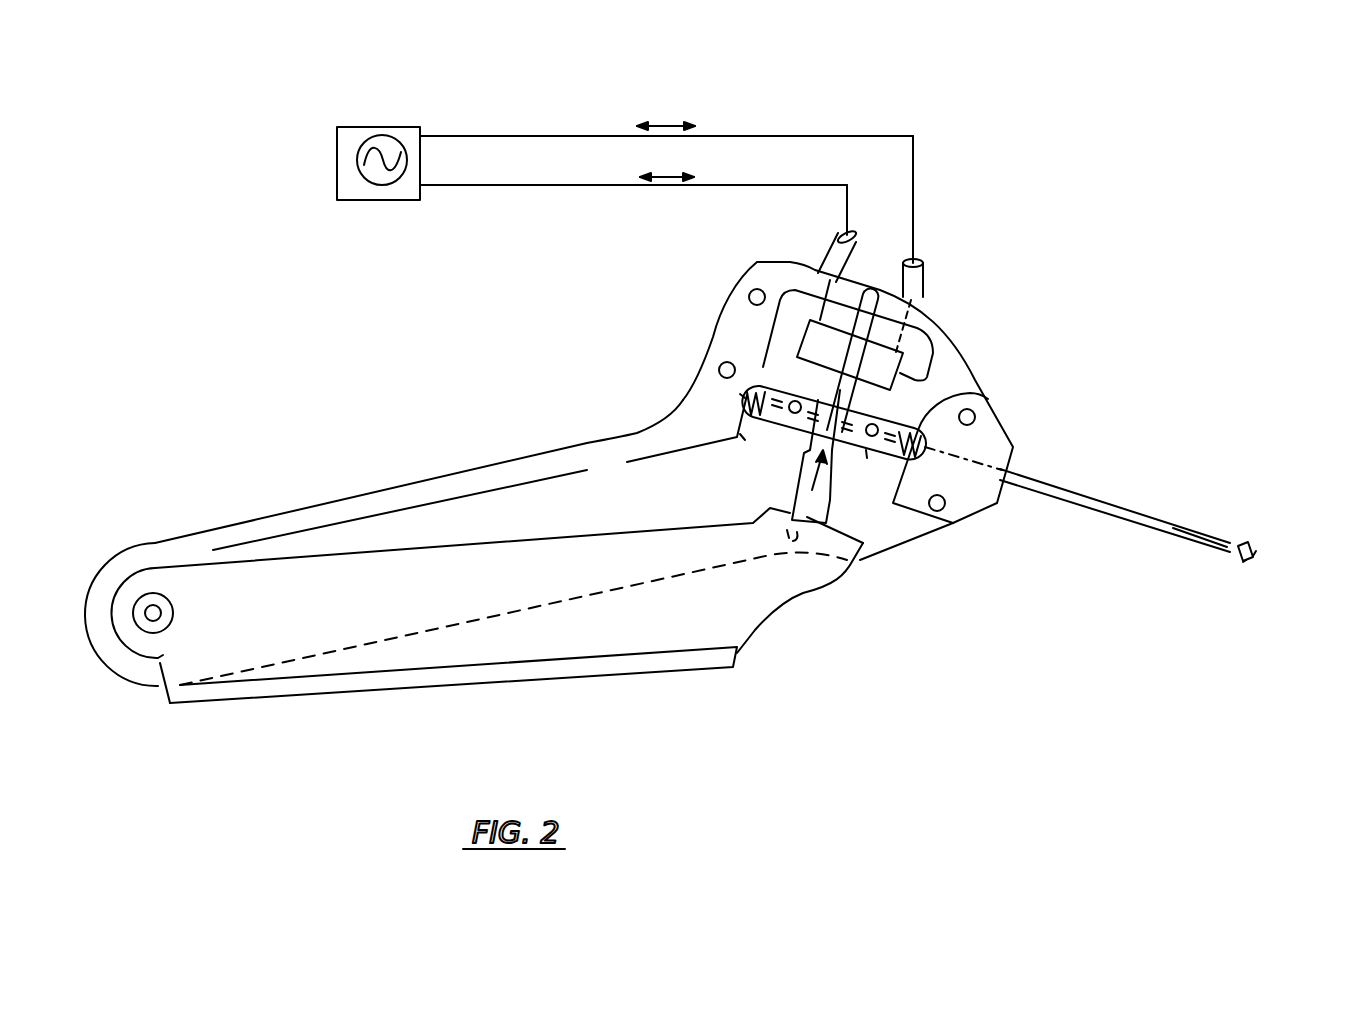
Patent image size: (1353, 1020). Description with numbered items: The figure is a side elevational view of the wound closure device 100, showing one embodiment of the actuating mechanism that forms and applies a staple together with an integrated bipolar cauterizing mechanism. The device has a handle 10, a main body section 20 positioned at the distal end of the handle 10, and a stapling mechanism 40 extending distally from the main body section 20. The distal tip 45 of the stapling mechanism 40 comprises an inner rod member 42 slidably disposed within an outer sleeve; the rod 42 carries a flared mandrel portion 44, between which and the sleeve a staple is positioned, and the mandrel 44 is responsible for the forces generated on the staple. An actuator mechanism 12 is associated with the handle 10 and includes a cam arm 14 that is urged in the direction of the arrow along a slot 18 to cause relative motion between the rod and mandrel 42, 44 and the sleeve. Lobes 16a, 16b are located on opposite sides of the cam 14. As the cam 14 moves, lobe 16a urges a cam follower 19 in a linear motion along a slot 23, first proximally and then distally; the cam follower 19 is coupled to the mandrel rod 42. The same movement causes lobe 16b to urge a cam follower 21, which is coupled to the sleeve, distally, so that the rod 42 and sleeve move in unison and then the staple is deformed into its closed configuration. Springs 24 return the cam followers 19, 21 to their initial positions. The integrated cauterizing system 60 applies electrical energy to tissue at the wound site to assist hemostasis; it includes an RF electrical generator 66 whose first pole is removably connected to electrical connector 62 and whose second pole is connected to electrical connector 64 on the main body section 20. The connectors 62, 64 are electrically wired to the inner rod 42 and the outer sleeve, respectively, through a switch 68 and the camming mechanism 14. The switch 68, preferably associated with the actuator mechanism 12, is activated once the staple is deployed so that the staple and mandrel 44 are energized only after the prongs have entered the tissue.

The wound closure device 100 is at (186, 228).
The handle 10 is at (433, 477).
The actuator mechanism 12 is at (683, 670).
The cam arm 14 is at (800, 492).
The lobe 16a is at (807, 458).
The lobe 16b is at (833, 493).
The slot 18 is at (872, 293).
The cam follower 19 is at (747, 432).
The main body section 20 is at (963, 345).
The cam follower 21 is at (866, 453).
The slot 23 is at (743, 395).
The springs 24 is at (757, 380).
The stapling mechanism 40 is at (1090, 497).
The inner rod member 42 is at (1234, 543).
The mandrel portion 44 is at (1245, 562).
The distal tip 45 is at (1260, 535).
The integrated cauterizing system 60 is at (678, 92).
The electrical connector 62 is at (850, 258).
The electrical connector 64 is at (925, 280).
The electrical generator 66 is at (381, 118).
The switch 68 is at (940, 383).